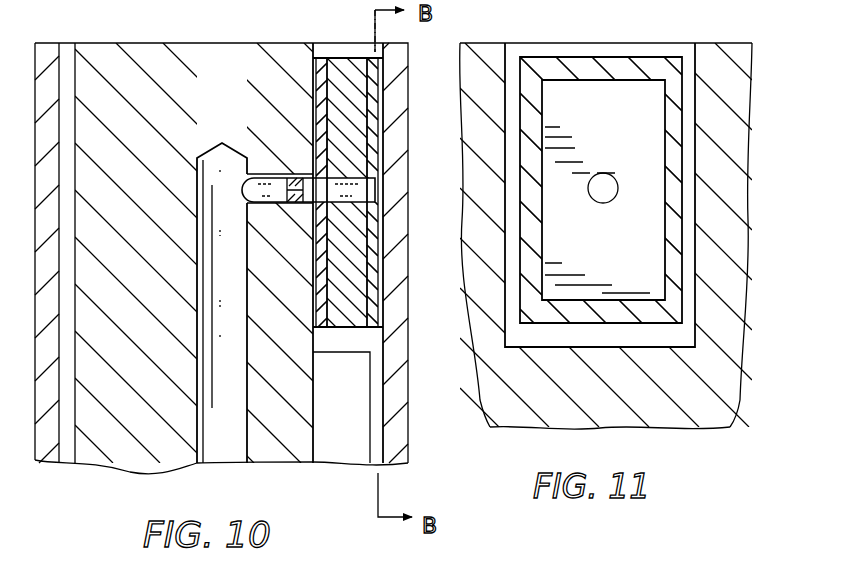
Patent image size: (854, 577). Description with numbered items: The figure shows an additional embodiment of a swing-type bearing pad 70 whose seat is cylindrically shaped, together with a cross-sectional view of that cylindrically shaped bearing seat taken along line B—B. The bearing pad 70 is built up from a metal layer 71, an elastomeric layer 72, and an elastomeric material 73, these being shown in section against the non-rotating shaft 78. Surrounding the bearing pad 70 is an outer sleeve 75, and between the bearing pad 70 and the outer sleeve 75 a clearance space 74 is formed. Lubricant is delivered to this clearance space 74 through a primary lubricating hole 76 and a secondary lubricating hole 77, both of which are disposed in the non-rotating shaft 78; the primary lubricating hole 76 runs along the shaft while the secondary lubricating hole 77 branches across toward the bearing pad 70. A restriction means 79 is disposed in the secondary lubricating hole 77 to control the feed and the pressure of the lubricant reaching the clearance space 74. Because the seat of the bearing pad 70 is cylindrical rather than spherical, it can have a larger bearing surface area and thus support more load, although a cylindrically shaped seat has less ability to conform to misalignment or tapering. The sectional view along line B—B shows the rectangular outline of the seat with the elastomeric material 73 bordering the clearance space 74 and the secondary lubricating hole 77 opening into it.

In FIG. 10, the bearing pad 70 is at (320, 92).
In FIG. 10, the metal layer 71 is at (352, 54).
In FIG. 10, the elastomeric layer 72 is at (344, 128).
In FIG. 10, the elastomeric material 73 is at (387, 103).
In FIG. 11, the elastomeric material 73 is at (672, 193).
In FIG. 10, the clearance space 74 is at (384, 139).
In FIG. 11, the clearance space 74 is at (640, 134).
In FIG. 10, the outer sleeve 75 is at (397, 262).
In FIG. 10, the primary lubricating hole 76 is at (198, 225).
In FIG. 10, the secondary lubricating hole 77 is at (258, 194).
In FIG. 11, the secondary lubricating hole 77 is at (598, 193).
In FIG. 10, the non-rotating shaft 78 is at (158, 302).
In FIG. 10, the restriction means 79 is at (297, 204).